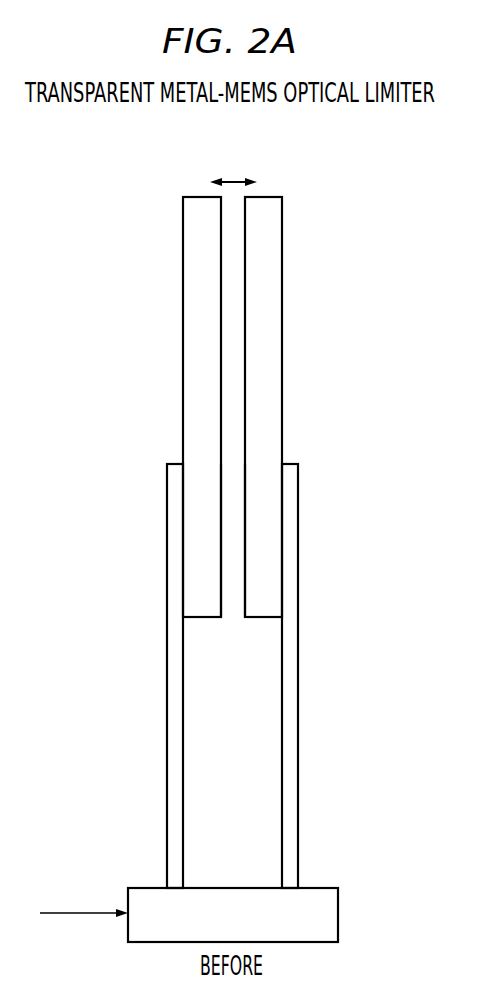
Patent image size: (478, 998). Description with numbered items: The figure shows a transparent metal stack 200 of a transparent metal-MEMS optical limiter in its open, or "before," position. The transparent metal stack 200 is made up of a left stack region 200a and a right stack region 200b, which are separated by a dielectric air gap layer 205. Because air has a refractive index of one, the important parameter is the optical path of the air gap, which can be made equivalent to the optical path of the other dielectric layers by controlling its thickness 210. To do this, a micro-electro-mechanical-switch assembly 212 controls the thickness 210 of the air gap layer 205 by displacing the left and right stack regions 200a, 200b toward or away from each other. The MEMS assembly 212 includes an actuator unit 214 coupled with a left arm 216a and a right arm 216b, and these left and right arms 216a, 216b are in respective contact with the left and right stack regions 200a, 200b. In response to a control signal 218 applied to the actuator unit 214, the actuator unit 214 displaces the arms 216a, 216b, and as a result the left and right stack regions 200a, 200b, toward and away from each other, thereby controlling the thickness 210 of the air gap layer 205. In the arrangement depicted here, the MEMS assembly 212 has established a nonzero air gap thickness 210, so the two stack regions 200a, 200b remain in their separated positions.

The transparent metal stack 200 is at (285, 378).
The left stack region 200a is at (197, 197).
The right stack region 200b is at (262, 197).
The dielectric air gap layer 205 is at (229, 465).
The thickness 210 is at (233, 189).
The micro-electro-mechanical-switch assembly 212 is at (249, 676).
The actuator unit 214 is at (340, 910).
The left arm 216a is at (167, 645).
The right arm 216b is at (298, 640).
The control signal 218 is at (82, 910).